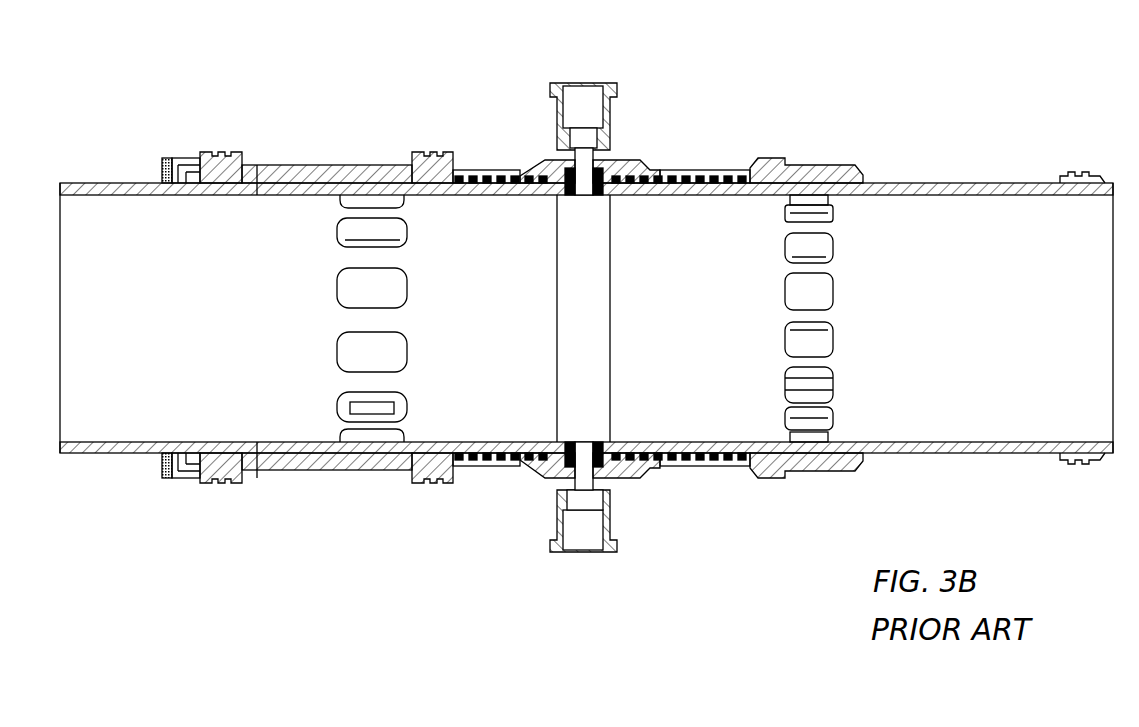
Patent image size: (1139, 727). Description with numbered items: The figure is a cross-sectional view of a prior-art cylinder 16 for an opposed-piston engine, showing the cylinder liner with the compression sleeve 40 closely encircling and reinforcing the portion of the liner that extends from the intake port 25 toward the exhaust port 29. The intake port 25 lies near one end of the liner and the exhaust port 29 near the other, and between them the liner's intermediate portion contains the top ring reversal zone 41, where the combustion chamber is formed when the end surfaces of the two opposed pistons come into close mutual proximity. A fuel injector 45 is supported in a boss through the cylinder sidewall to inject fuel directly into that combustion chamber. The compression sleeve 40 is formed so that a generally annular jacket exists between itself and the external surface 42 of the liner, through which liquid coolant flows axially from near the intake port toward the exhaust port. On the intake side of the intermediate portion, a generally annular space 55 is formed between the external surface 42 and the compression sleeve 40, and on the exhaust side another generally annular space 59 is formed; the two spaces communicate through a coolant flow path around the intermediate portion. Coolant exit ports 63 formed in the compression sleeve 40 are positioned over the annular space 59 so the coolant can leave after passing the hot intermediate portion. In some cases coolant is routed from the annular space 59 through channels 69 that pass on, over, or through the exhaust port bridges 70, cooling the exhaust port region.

The cylinder 16 is at (523, 510).
The intake port 25 is at (813, 243).
The exhaust port 29 is at (360, 168).
The compression sleeve 40 is at (707, 476).
The top ring reversal zone 41 is at (588, 243).
The external surface 42 is at (495, 165).
The fuel injector 45 is at (582, 97).
The annular space 55 is at (712, 165).
The annular space 59 is at (478, 170).
The coolant exit port 63 is at (485, 462).
The channel 69 is at (257, 165).
The exhaust port bridge 70 is at (384, 236).